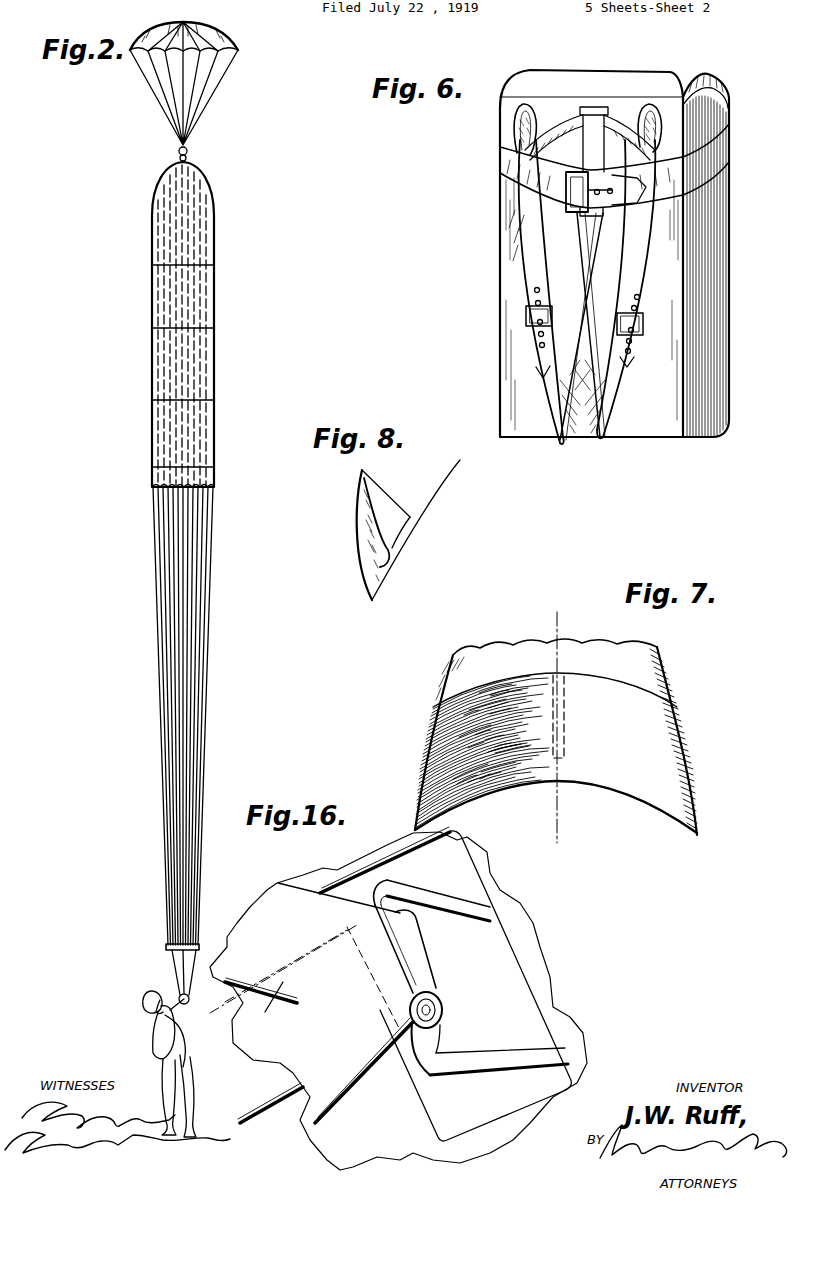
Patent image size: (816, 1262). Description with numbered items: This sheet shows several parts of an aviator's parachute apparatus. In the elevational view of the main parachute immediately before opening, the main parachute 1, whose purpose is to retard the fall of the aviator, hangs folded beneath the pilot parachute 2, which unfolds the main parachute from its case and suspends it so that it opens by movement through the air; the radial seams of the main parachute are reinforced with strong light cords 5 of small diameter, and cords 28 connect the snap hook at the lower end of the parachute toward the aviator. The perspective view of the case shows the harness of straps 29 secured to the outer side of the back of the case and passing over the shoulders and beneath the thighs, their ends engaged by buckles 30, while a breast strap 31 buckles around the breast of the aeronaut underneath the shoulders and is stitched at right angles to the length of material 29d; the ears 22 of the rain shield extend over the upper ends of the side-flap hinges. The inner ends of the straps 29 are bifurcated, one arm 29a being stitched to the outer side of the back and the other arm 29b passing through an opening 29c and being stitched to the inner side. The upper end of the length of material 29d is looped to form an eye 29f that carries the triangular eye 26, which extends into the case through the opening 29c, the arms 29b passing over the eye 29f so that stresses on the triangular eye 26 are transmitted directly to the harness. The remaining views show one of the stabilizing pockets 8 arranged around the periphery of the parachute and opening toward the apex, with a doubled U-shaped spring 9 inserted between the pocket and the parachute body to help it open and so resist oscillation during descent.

In FIG. 2, the main parachute 1 is at (214, 296).
In FIG. 2, the pilot parachute 2 is at (240, 47).
In FIG. 2, the cords 5 is at (218, 675).
In FIG. 2, the cords 28 is at (160, 948).
In FIG. 6, the ears of rain shield 22 is at (712, 82).
In FIG. 6, the straps 29 is at (528, 270).
In FIG. 6, the arm 29a is at (527, 123).
In FIG. 6, the arm 29b is at (623, 112).
In FIG. 16, the arm 29b is at (300, 1025).
In FIG. 16, the opening 29c is at (453, 863).
In FIG. 6, the length of material 29d is at (585, 278).
In FIG. 16, the eye 29f is at (433, 1013).
In FIG. 6, the buckles 30 is at (526, 318).
In FIG. 6, the breast strap 31 is at (672, 175).
In FIG. 8, the stabilizing pockets 8 is at (362, 530).
In FIG. 7, the stabilizing pockets 8 is at (498, 690).
In FIG. 8, the doubled springs 9 is at (402, 528).
In FIG. 16, the triangular eye 26 is at (460, 902).